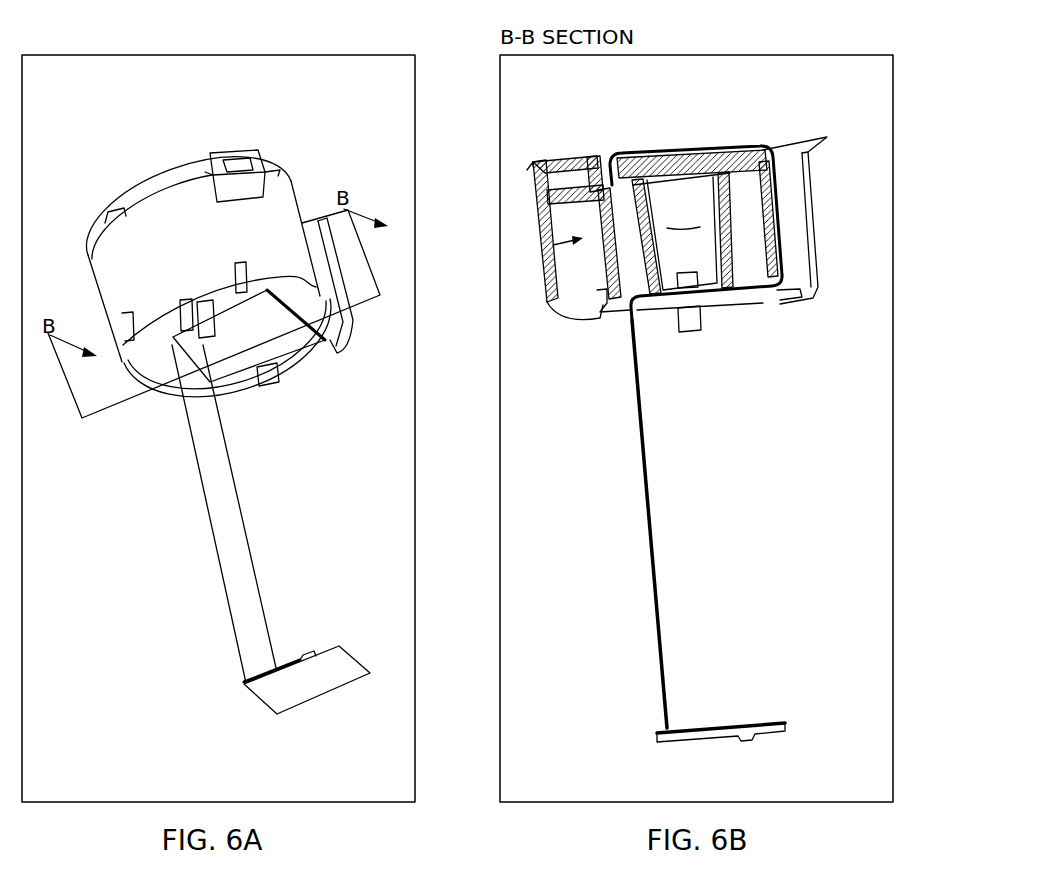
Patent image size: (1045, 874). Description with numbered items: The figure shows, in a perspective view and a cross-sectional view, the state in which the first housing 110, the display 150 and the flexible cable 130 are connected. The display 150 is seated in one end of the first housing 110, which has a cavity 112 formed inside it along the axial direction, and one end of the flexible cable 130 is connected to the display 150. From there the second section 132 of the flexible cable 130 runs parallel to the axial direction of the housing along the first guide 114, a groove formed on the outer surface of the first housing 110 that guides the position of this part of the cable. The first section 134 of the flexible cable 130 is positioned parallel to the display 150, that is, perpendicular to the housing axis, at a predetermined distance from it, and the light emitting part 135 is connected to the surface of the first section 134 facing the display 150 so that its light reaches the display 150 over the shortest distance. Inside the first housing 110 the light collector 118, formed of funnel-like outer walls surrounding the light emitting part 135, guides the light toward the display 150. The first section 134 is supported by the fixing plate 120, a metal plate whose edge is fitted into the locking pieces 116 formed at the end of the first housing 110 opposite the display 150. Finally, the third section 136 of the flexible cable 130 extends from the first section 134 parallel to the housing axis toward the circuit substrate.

In FIG. 6A, the first housing 110 is at (283, 238).
In FIG. 6B, the first housing 110 is at (540, 244).
In FIG. 6B, the cavity 112 is at (683, 224).
In FIG. 6B, the first guide 114 is at (788, 220).
In FIG. 6A, the locking pieces 116 is at (253, 393).
In FIG. 6B, the locking pieces 116 is at (693, 327).
In FIG. 6B, the light collector 118 is at (724, 273).
In FIG. 6A, the fixing plate 120 is at (276, 345).
In FIG. 6B, the fixing plate 120 is at (723, 293).
In FIG. 6A, the flexible cable 130 is at (283, 527).
In FIG. 6B, the flexible cable 130 is at (632, 525).
In FIG. 6B, the second section 132 is at (781, 240).
In FIG. 6B, the first section 134 is at (783, 291).
In FIG. 6B, the light emitting part 135 is at (688, 291).
In FIG. 6B, the third section 136 is at (652, 580).
In FIG. 6B, the display 150 is at (628, 151).